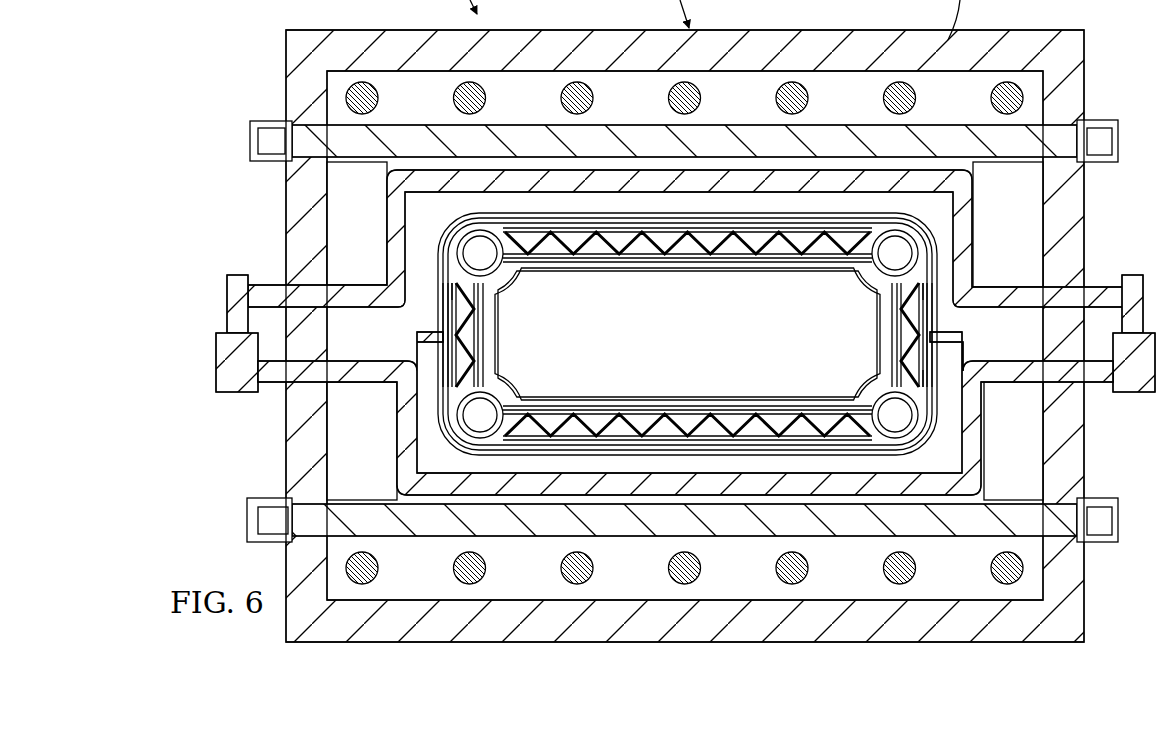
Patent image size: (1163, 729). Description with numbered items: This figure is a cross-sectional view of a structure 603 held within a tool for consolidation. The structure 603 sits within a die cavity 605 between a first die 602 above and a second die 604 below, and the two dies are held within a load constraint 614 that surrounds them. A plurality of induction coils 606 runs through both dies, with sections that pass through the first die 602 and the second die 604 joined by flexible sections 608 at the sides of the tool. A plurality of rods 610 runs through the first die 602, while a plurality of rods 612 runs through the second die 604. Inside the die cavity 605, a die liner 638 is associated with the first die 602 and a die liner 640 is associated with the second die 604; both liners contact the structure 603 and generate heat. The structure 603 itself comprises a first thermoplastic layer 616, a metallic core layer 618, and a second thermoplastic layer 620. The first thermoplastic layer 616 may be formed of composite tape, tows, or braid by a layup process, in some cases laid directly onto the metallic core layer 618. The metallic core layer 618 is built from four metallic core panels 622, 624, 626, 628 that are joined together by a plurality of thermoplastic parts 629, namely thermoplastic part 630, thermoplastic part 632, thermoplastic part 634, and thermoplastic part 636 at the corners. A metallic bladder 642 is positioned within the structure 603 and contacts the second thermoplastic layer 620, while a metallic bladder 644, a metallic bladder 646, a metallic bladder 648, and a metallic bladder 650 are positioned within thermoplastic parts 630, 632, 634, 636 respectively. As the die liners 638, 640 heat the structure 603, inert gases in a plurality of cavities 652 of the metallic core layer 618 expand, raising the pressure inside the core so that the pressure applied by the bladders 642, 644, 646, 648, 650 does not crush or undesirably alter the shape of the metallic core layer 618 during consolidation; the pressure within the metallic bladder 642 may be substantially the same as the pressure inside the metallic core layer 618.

The first die 602 is at (1037, 248).
The structure 603 is at (929, 233).
The second die 604 is at (1037, 425).
The die cavity 605 is at (572, 460).
The plurality of induction coils 606 is at (260, 283).
The flexible sections 608 is at (218, 362).
The plurality of rods 610 is at (246, 136).
The plurality of rods 612 is at (245, 520).
The load constraint 614 is at (940, 600).
The first thermoplastic layer 616 is at (933, 297).
The metallic core layer 618 is at (617, 414).
The second thermoplastic layer 620 is at (615, 258).
The metallic core panel 622 is at (760, 258).
The metallic core panel 624 is at (880, 342).
The metallic core panel 626 is at (757, 409).
The metallic core panel 628 is at (498, 345).
The plurality of thermoplastic parts 629 is at (437, 232).
The thermoplastic part 630 is at (470, 256).
The thermoplastic part 632 is at (902, 260).
The thermoplastic part 634 is at (920, 420).
The thermoplastic part 636 is at (455, 418).
The die liner 638 is at (440, 297).
The die liner 640 is at (440, 376).
The metallic bladder 642 is at (711, 350).
The metallic bladder 644 is at (452, 253).
The metallic bladder 646 is at (920, 253).
The metallic bladder 648 is at (918, 409).
The metallic bladder 650 is at (476, 413).
The plurality of cavities 652 is at (915, 369).